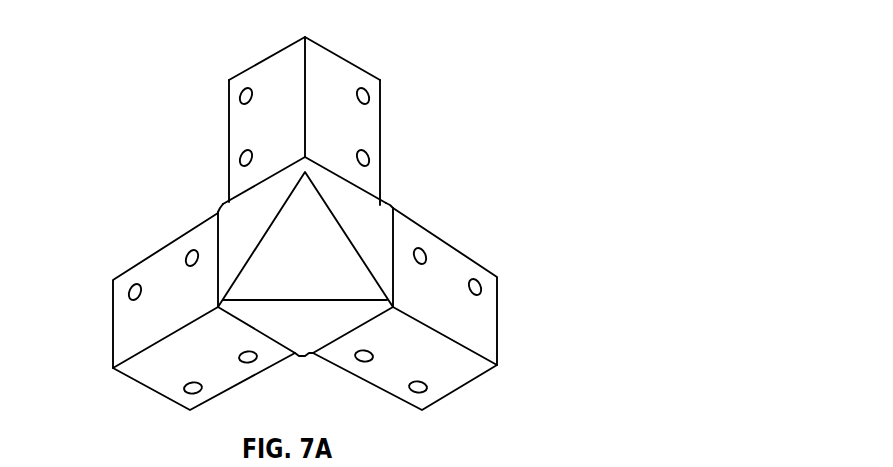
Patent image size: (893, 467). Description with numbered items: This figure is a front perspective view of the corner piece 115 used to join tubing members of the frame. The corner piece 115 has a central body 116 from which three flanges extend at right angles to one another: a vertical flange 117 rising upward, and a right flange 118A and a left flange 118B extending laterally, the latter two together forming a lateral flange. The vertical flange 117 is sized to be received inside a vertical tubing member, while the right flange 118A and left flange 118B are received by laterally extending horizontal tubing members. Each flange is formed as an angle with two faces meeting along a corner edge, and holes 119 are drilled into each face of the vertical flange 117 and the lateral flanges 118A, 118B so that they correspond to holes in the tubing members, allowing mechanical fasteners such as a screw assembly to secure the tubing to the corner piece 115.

The corner piece 115 is at (453, 47).
The body 116 is at (368, 222).
The vertical flange 117 is at (333, 80).
The right flange 118A is at (480, 332).
The left flange 118B is at (127, 333).
The holes 119 is at (363, 158).